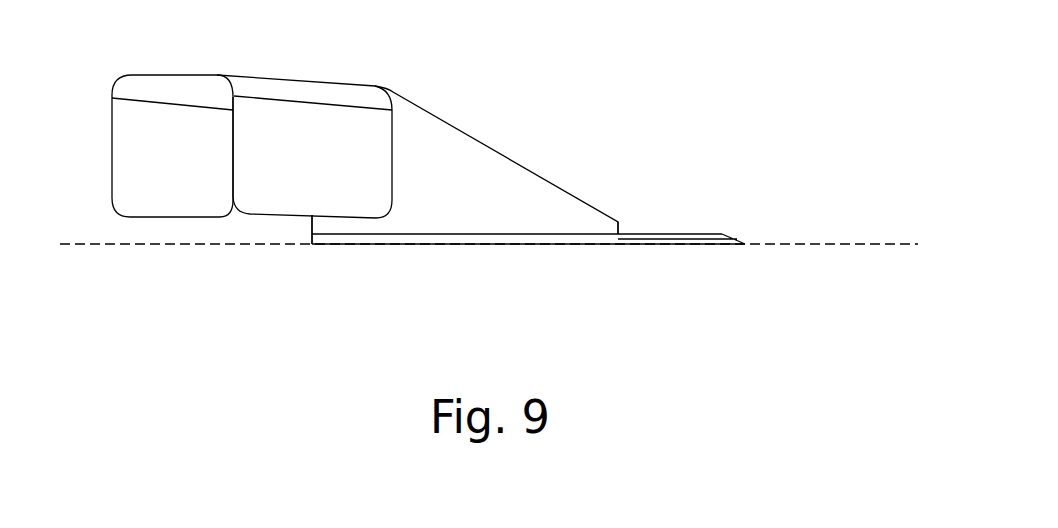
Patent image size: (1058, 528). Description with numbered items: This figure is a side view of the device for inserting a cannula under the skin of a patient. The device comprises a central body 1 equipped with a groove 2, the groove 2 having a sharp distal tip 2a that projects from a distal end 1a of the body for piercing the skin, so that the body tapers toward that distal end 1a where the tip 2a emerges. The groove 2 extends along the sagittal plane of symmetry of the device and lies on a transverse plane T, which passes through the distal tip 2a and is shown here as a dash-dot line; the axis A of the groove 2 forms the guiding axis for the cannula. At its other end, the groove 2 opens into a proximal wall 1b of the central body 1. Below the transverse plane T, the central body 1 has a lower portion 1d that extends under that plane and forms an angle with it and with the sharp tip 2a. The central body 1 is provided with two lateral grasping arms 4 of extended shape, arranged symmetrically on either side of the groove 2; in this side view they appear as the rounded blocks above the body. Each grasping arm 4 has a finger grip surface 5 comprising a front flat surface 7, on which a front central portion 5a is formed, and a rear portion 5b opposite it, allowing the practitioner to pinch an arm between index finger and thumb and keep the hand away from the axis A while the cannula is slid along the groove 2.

The central body 1 is at (484, 213).
The distal end 1a is at (618, 222).
The proximal wall 1b is at (311, 228).
The lower portion 1d is at (430, 245).
The groove 2 is at (699, 192).
The sharp distal tip 2a is at (707, 234).
The lateral grasping arm 4 is at (139, 116).
The finger grip surface 5 is at (139, 116).
The rear portion 5b is at (112, 120).
The front central portion 5a is at (304, 114).
The front flat surface 7 is at (305, 120).
The transverse plane T is at (97, 245).
The axis A is at (481, 244).